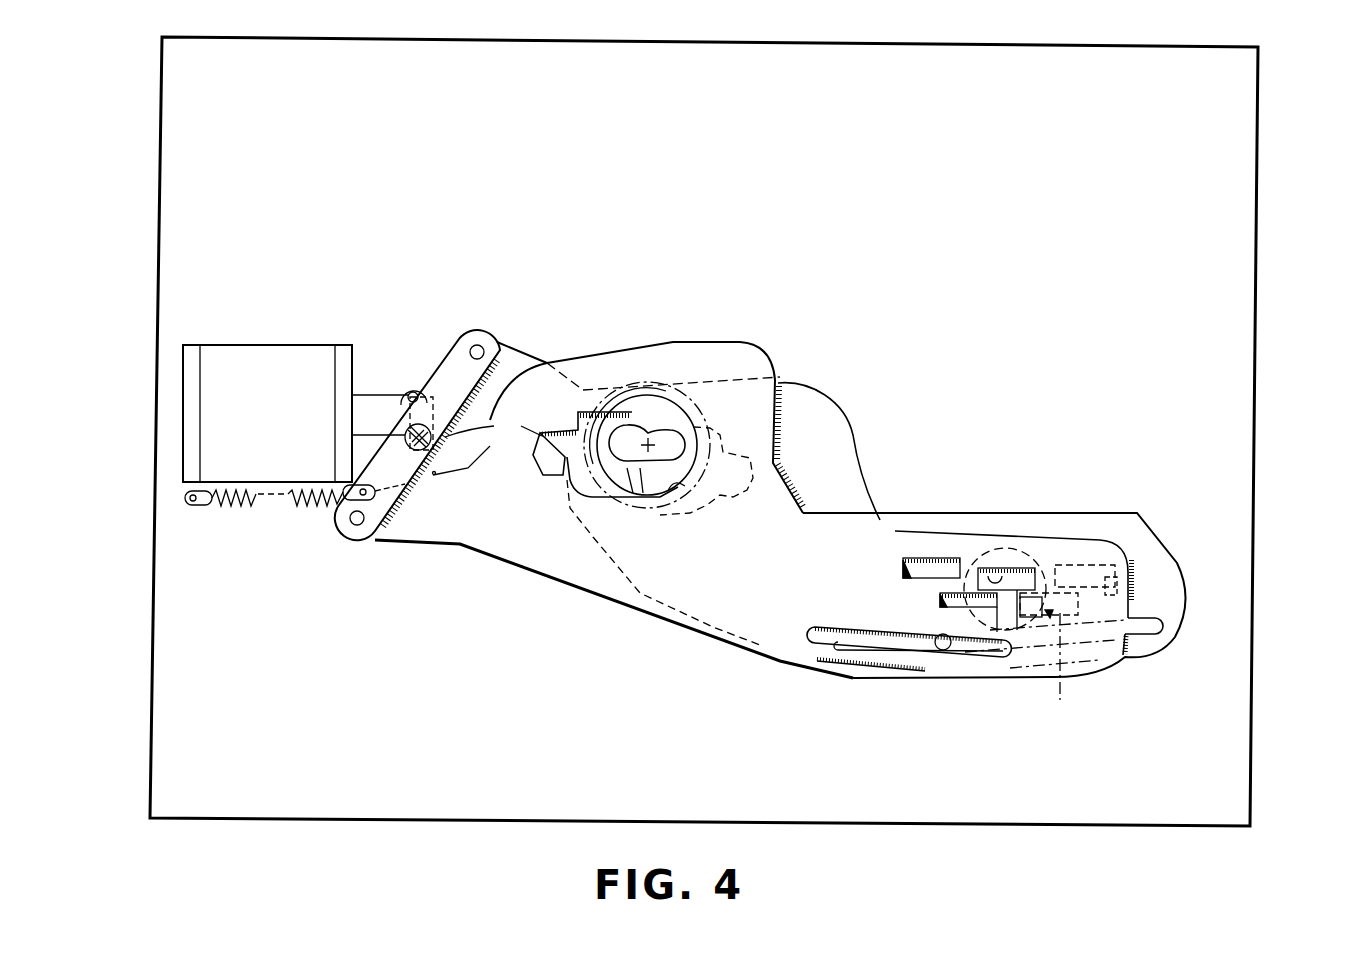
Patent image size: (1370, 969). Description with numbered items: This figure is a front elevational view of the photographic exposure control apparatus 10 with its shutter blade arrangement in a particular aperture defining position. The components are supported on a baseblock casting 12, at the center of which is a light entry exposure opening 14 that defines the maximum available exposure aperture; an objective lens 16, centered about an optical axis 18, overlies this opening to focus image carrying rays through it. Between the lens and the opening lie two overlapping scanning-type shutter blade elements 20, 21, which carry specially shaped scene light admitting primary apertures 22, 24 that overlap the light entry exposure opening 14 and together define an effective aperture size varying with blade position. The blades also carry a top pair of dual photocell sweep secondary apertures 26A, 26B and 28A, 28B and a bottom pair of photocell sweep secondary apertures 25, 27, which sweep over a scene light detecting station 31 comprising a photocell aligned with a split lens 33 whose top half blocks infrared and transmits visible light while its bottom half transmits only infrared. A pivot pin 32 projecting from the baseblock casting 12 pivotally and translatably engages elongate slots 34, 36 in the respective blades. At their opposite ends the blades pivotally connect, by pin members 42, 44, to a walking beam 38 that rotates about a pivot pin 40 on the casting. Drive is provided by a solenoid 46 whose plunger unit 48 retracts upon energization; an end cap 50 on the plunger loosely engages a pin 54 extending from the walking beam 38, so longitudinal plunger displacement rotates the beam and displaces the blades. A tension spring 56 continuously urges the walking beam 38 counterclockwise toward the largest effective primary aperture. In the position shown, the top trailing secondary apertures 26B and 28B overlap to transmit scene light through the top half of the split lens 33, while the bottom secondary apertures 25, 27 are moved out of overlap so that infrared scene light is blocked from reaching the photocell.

The photographic exposure control apparatus 10 is at (1286, 204).
The baseblock casting 12 is at (1103, 206).
The light entry exposure opening 14 is at (670, 492).
The objective lens 16 is at (632, 395).
The optical axis 18 is at (645, 450).
The shutter blade element 20 is at (530, 356).
The shutter blade element 21 is at (404, 547).
The primary aperture 22 is at (688, 490).
The primary aperture 24 is at (605, 454).
The photocell sweep secondary aperture 25 is at (1063, 665).
The photocell sweep secondary aperture 26A is at (1108, 592).
The photocell sweep secondary aperture 26B is at (1018, 572).
The photocell sweep secondary aperture 27 is at (940, 601).
The photocell sweep secondary aperture 28A is at (903, 565).
The photocell sweep secondary aperture 28B is at (985, 575).
The scene light detecting station 31 is at (999, 546).
The pivot pin 32 is at (945, 650).
The split lens 33 is at (1005, 632).
The elongate slot 34 is at (1152, 634).
The elongate slot 36 is at (847, 648).
The walking beam 38 is at (438, 476).
The pivot pin 40 is at (487, 445).
The pin member 42 is at (477, 343).
The pin member 44 is at (352, 520).
The solenoid 46 is at (260, 340).
The plunger unit 48 is at (378, 393).
The end cap 50 is at (436, 393).
The pin 54 is at (408, 400).
The tension spring 56 is at (235, 505).